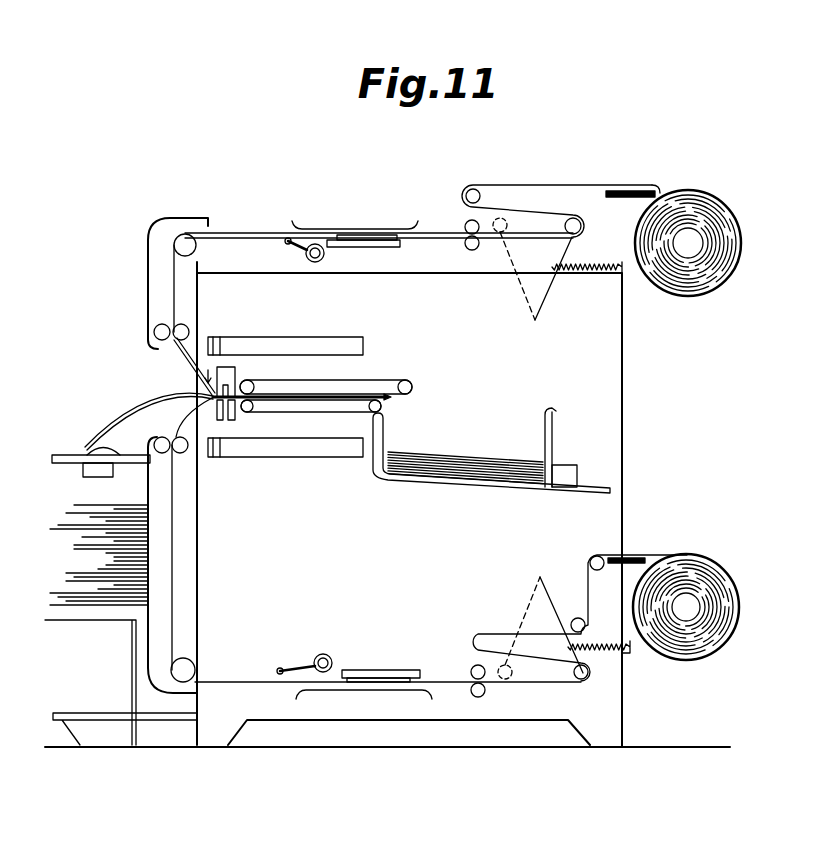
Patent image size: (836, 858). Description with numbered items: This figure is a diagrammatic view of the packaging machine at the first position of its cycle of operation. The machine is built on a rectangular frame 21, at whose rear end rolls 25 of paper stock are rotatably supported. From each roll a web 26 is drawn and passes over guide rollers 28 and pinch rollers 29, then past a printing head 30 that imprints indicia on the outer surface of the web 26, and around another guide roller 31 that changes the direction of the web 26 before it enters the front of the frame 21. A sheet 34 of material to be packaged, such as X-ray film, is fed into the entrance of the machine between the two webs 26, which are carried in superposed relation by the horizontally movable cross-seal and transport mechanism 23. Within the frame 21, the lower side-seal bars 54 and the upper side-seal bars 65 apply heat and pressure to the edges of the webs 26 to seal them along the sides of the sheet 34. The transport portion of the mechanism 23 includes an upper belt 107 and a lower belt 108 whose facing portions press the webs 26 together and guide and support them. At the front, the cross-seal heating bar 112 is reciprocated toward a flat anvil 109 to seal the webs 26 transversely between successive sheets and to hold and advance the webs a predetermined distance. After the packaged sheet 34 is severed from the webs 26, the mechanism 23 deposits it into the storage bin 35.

The rectangular frame 21 is at (610, 411).
The cross-seal and transport mechanism 23 is at (465, 238).
The rolls of paper stock 25 is at (718, 214).
The webs of paper stock 26 is at (548, 184).
The guide rollers 28 is at (578, 233).
The pinch rollers 29 is at (481, 692).
The printing head 30 is at (347, 231).
The guide roller 31 is at (192, 247).
The sheet 34 is at (122, 417).
The storage bin 35 is at (448, 482).
The lower side-seal bars 54 is at (283, 450).
The upper side-seal bars 65 is at (273, 340).
The upper belt 107 is at (367, 381).
The lower belt 108 is at (302, 411).
The flat anvil 109 is at (234, 411).
The cross-seal heating bar 112 is at (234, 378).